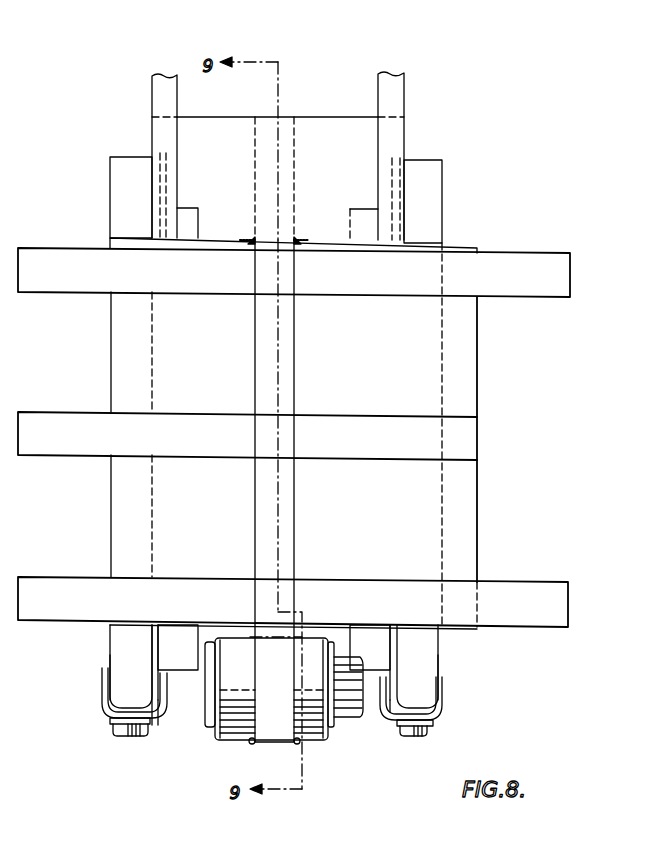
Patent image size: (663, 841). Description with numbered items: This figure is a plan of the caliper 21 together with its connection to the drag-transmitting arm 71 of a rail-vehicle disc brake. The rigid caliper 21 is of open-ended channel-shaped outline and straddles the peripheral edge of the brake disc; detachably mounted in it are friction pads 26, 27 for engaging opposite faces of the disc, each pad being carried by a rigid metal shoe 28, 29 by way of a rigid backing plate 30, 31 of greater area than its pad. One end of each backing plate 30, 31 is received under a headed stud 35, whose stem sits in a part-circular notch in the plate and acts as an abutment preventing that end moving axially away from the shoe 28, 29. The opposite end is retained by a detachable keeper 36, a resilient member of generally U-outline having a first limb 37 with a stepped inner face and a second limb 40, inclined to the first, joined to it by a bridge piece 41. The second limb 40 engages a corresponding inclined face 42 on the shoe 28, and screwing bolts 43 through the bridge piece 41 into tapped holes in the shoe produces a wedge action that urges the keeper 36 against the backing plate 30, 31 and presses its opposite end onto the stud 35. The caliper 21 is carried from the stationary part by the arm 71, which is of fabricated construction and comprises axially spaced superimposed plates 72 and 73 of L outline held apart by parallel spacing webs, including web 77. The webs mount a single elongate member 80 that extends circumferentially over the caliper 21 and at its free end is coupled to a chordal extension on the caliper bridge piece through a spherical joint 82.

The caliper 21 is at (455, 501).
The friction pad 26 is at (367, 223).
The friction pad 27 is at (188, 224).
The shoe 28 is at (420, 637).
The shoe 29 is at (133, 642).
The backing plate 30 is at (403, 229).
The backing plate 31 is at (160, 213).
The headed stud 35 is at (163, 165).
The keeper 36 is at (130, 712).
The first limb 37 is at (155, 697).
The second limb 40 is at (105, 692).
The bridge piece 41 is at (138, 712).
The inclined face 42 is at (110, 658).
The bolt 43 is at (117, 730).
The drag-transmitting arm 71 is at (273, 345).
The plate 72 is at (386, 95).
The plate 73 is at (163, 95).
The spacing web 77 is at (320, 137).
The elongate member 80 is at (268, 500).
The spherical joint 82 is at (315, 708).